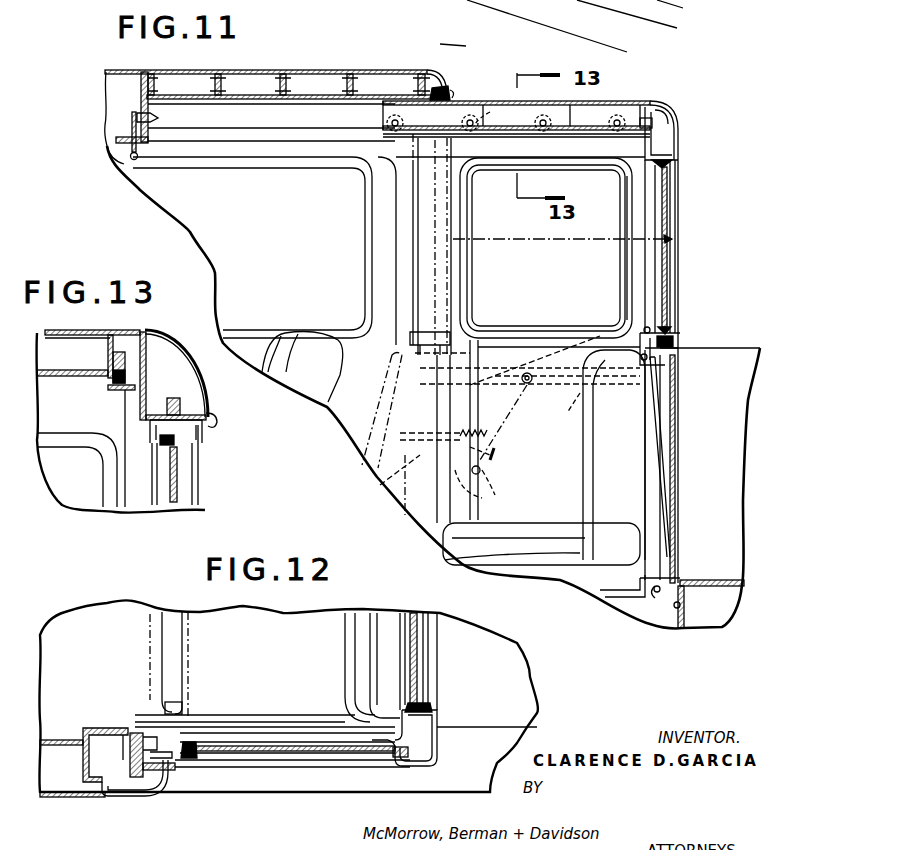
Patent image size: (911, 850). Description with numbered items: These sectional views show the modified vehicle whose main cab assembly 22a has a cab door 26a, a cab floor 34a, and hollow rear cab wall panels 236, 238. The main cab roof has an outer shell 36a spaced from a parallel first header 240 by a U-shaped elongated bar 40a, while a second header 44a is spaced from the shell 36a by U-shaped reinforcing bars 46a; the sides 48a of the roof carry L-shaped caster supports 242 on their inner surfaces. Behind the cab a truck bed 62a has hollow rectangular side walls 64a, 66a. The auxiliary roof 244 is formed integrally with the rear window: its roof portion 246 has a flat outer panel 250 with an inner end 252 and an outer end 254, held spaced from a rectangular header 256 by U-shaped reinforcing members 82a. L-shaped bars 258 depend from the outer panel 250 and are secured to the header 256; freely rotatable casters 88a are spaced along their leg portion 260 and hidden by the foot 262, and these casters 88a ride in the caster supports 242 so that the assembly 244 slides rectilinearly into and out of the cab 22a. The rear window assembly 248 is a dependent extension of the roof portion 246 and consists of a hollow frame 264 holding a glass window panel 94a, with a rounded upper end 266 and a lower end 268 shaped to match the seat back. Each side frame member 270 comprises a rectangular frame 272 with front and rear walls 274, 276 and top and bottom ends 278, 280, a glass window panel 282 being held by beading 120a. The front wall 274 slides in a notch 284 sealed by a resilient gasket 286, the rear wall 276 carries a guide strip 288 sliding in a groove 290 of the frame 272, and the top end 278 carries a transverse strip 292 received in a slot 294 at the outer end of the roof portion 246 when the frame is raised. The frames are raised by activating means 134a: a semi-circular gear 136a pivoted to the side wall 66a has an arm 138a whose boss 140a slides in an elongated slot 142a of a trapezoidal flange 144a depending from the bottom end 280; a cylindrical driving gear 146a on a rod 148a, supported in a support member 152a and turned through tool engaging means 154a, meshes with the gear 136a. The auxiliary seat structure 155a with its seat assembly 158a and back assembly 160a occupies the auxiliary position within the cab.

In FIG. 11, the main cab assembly 22a is at (132, 67).
In FIG. 11, the cab door 26a is at (245, 345).
In FIG. 11, the cab floor 34a is at (625, 592).
In FIG. 11, the outer shell 36a is at (310, 72).
In FIG. 11, the U-shaped elongated bar 40a is at (140, 104).
In FIG. 11, the second header 44a is at (322, 108).
In FIG. 11, the U-shaped reinforcing bars 46a is at (226, 84).
In FIG. 11, the sides of the cab roof 48a is at (262, 100).
In FIG. 11, the truck bed 62a is at (703, 583).
In FIG. 11, the side wall 64a is at (467, 0).
In FIG. 11, the side wall 66a is at (721, 375).
In FIG. 11, the U-shaped reinforcing members 82a is at (478, 104).
In FIG. 13, the U-shaped reinforcing members 82a is at (55, 360).
In FIG. 11, the casters 88a is at (655, 128).
In FIG. 13, the casters 88a is at (122, 368).
In FIG. 11, the glass window panel 94a is at (668, 230).
In FIG. 13, the glass window panel 94a is at (75, 488).
In FIG. 12, the glass window panel 94a is at (418, 670).
In FIG. 11, the beading 120a is at (650, 292).
In FIG. 12, the beading 120a is at (195, 758).
In FIG. 11, the activating means 134a is at (502, 468).
In FIG. 11, the semi-circular gear 136a is at (490, 492).
In FIG. 11, the elongated arm 138a is at (500, 430).
In FIG. 11, the boss 140a is at (519, 416).
In FIG. 11, the elongated slot 142a is at (581, 412).
In FIG. 11, the trapezoidal flange 144a is at (472, 382).
In FIG. 11, the cylindrical driving gear 146a is at (505, 452).
In FIG. 11, the rod 148a is at (405, 518).
In FIG. 11, the support member 152a is at (382, 485).
In FIG. 11, the tool engaging means 154a is at (365, 452).
In FIG. 11, the auxiliary seat structure 155a is at (678, 458).
In FIG. 11, the seat assembly 158a is at (530, 530).
In FIG. 11, the back assembly 160a is at (580, 515).
In FIG. 12, the rear cab wall panel 236 is at (170, 775).
In FIG. 11, the rear cab wall panel 238 is at (403, 242).
In FIG. 11, the first header 240 is at (128, 158).
In FIG. 11, the L-shaped caster support 242 is at (248, 132).
In FIG. 11, the auxiliary roof 244 is at (650, 101).
In FIG. 13, the auxiliary roof 244 is at (90, 331).
In FIG. 11, the roof portion 246 is at (608, 101).
In FIG. 13, the roof portion 246 is at (70, 330).
In FIG. 11, the rear window assembly 248 is at (680, 265).
In FIG. 11, the outer panel 250 is at (494, 100).
In FIG. 11, the inner end 252 is at (382, 112).
In FIG. 11, the outer end 254 is at (682, 115).
In FIG. 11, the header 256 is at (518, 130).
In FIG. 13, the header 256 is at (65, 380).
In FIG. 13, the L-shaped bar 258 is at (110, 394).
In FIG. 11, the leg portion 260 is at (592, 138).
In FIG. 13, the leg portion 260 is at (125, 350).
In FIG. 13, the foot 262 is at (120, 445).
In FIG. 11, the hollow frame 264 is at (672, 207).
In FIG. 13, the hollow frame 264 is at (130, 495).
In FIG. 12, the hollow frame 264 is at (428, 697).
In FIG. 11, the rounded upper end 266 is at (683, 103).
In FIG. 11, the lower end 268 is at (670, 340).
In FIG. 11, the side frame member 270 is at (650, 300).
In FIG. 12, the side frame member 270 is at (250, 765).
In FIG. 11, the rectangular frame 272 is at (640, 200).
In FIG. 12, the rectangular frame 272 is at (332, 765).
In FIG. 12, the front wall 274 is at (125, 765).
In FIG. 11, the rear wall 276 is at (648, 320).
In FIG. 12, the rear wall 276 is at (432, 742).
In FIG. 11, the top end 278 is at (620, 168).
In FIG. 13, the top end 278 is at (203, 425).
In FIG. 11, the bottom end 280 is at (572, 345).
In FIG. 11, the glass window panel 282 is at (585, 330).
In FIG. 12, the glass window panel 282 is at (302, 765).
In FIG. 12, the notch 284 is at (182, 760).
In FIG. 12, the resilient gasket 286 is at (140, 735).
In FIG. 12, the elongated guide strip 288 is at (395, 760).
In FIG. 12, the groove 290 is at (370, 740).
In FIG. 13, the strip 292 is at (182, 405).
In FIG. 13, the slot 294 is at (205, 420).